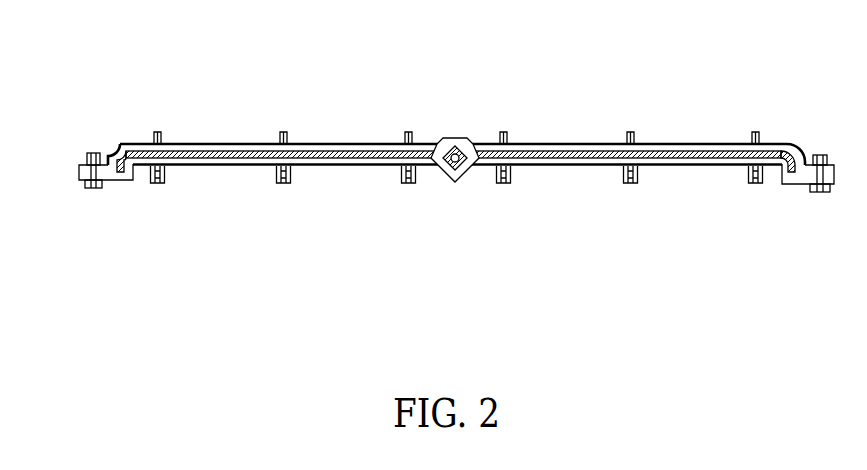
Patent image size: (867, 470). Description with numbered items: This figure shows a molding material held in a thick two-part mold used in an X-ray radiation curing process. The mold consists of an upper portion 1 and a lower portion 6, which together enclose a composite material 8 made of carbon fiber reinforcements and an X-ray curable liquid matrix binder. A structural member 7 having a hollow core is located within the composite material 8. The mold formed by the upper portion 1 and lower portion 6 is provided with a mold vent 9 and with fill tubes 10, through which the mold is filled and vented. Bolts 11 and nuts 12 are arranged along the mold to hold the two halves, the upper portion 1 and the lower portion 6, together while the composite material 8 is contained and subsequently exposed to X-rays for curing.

The upper portion 1 is at (207, 145).
The lower portion 6 is at (263, 158).
The structural member 7 is at (443, 145).
The composite material 8 is at (448, 175).
The mold vent 9 is at (625, 132).
The fill tubes 10 is at (748, 182).
The bolts 11 is at (808, 188).
The nuts 12 is at (808, 153).